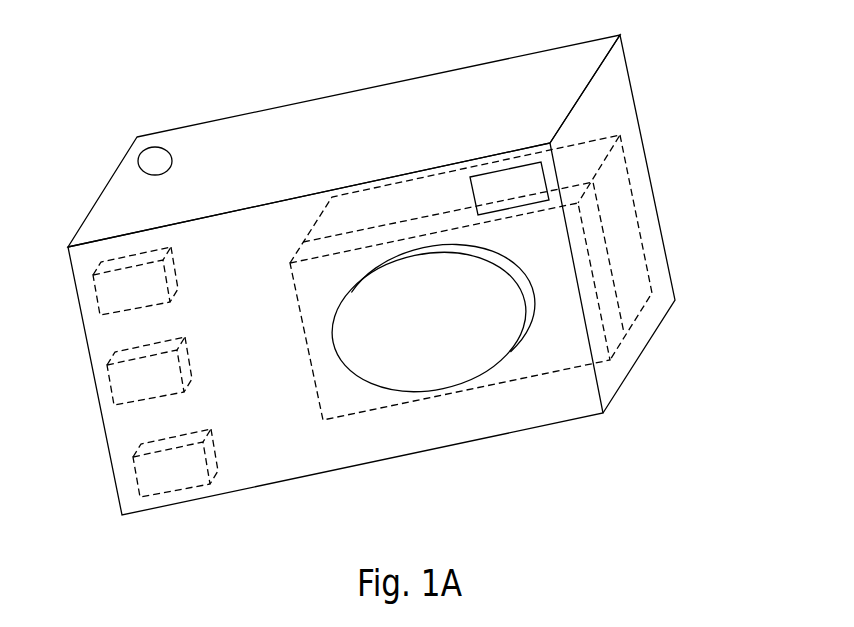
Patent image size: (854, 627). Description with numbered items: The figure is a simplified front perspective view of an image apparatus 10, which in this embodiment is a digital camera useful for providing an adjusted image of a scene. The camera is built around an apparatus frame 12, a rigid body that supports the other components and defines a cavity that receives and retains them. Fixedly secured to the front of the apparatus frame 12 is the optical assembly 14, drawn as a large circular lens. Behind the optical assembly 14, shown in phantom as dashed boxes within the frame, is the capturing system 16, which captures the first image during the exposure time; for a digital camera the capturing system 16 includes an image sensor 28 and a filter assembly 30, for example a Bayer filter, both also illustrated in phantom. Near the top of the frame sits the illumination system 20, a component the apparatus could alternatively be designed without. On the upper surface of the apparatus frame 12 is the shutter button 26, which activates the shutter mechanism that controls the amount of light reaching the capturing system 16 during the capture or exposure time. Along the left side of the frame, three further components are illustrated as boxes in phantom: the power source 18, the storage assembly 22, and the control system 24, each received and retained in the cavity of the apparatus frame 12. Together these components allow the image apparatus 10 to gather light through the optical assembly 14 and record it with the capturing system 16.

The image apparatus 10 is at (368, 275).
The apparatus frame 12 is at (288, 125).
The optical assembly 14 is at (485, 362).
The capturing system 16 is at (541, 287).
The power source 18 is at (155, 468).
The illumination system 20 is at (535, 172).
The storage assembly 22 is at (127, 383).
The control system 24 is at (112, 295).
The shutter button 26 is at (153, 162).
The image sensor 28 is at (661, 252).
The filter assembly 30 is at (615, 340).